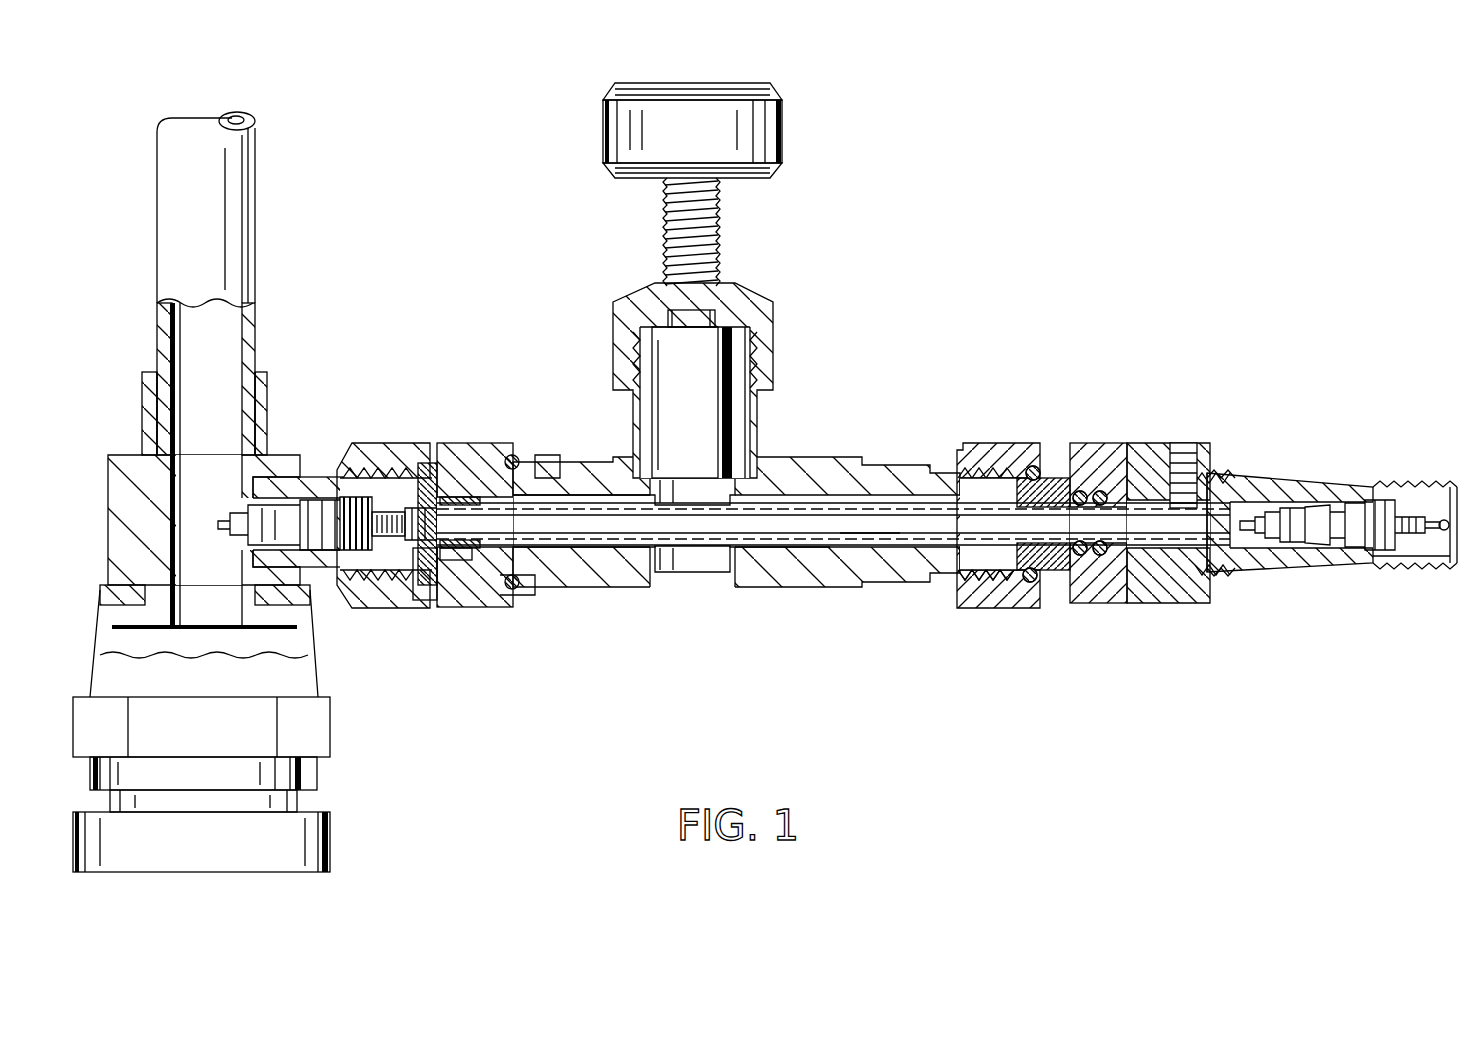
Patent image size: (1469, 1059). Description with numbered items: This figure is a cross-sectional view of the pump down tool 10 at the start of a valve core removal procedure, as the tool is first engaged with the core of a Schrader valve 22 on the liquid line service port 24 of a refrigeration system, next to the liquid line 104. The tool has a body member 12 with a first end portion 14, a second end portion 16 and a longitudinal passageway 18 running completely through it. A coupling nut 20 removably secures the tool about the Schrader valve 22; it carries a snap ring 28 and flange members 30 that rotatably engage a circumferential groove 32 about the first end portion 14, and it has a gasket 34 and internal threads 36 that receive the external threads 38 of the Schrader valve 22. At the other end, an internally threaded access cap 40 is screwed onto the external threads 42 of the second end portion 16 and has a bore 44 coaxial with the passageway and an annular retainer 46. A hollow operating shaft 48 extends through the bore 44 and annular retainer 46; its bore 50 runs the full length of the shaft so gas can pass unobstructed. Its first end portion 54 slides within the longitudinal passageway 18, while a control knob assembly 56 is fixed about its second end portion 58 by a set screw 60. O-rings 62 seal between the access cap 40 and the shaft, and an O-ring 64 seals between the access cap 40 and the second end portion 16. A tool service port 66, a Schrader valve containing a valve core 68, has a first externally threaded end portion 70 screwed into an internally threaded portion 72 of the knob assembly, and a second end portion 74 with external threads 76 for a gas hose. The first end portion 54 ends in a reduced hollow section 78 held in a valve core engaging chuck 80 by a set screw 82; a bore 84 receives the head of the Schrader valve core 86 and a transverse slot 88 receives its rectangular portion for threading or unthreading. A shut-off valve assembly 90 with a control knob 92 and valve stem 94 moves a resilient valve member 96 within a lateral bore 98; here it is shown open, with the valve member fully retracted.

The pump down tool 10 is at (968, 258).
The body member 12 is at (790, 482).
The first end portion 14 is at (470, 480).
The second end portion 16 is at (948, 476).
The longitudinal passageway 18 is at (826, 503).
The coupling nut 20 is at (368, 448).
The Schrader valve 22 is at (320, 490).
The liquid line service port 24 is at (135, 492).
The snap ring 28 is at (515, 597).
The flange members 30 is at (522, 462).
The circumferential groove 32 is at (555, 478).
The gasket 34 is at (430, 600).
The internal threads 36 is at (305, 605).
The external threads 38 is at (388, 580).
The access cap 40 is at (995, 443).
The external threads 42 is at (975, 580).
The bore 44 is at (1110, 495).
The annular retainer 46 is at (1046, 478).
The hollow operating shaft 48 is at (786, 552).
The bore of the hollow operating shaft 50 is at (855, 520).
The first end portion 54 is at (580, 550).
The control knob assembly 56 is at (1142, 603).
The second end portion 58 is at (1196, 590).
The set screw 60 is at (1183, 443).
The O-rings 62 is at (1098, 556).
The O-ring 64 is at (1028, 583).
The tool service port 66 is at (1298, 490).
The valve core 68 is at (1318, 527).
The first externally threaded end portion 70 is at (1240, 492).
The internally threaded portion 72 is at (1230, 576).
The second end portion 74 is at (1398, 565).
The external threads 76 is at (1432, 485).
The reduced hollow section 78 is at (470, 548).
The valve core engaging chuck 80 is at (455, 562).
The set screw 82 is at (472, 487).
The bore 84 is at (437, 485).
The Schrader valve core 86 is at (300, 540).
The transverse slot 88 is at (410, 476).
The shut-off valve assembly 90 is at (568, 156).
The control knob 92 is at (735, 142).
The valve stem 94 is at (662, 236).
The resilient valve member 96 is at (706, 372).
The lateral bore 98 is at (655, 415).
The liquid line 104 is at (205, 338).